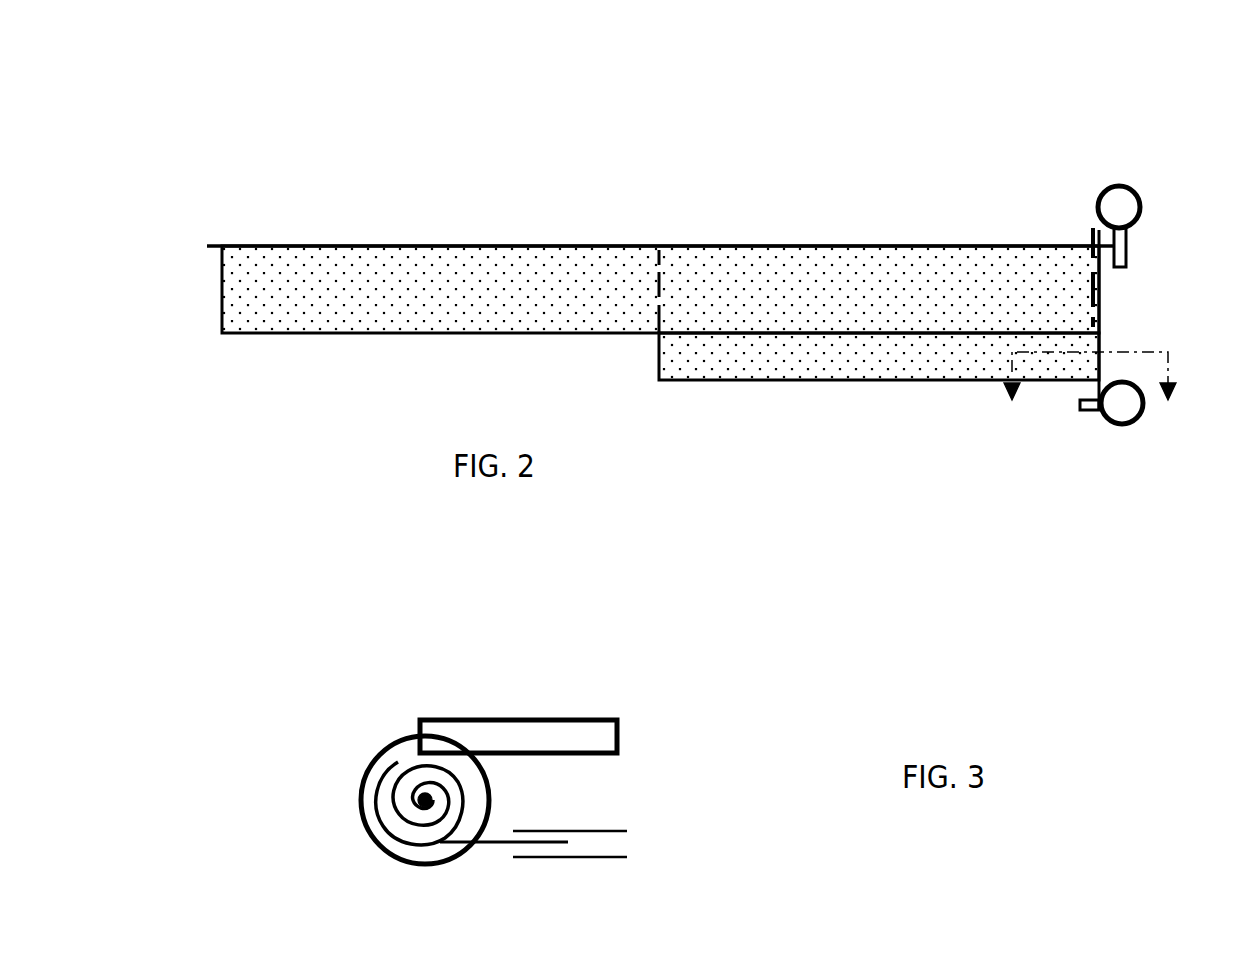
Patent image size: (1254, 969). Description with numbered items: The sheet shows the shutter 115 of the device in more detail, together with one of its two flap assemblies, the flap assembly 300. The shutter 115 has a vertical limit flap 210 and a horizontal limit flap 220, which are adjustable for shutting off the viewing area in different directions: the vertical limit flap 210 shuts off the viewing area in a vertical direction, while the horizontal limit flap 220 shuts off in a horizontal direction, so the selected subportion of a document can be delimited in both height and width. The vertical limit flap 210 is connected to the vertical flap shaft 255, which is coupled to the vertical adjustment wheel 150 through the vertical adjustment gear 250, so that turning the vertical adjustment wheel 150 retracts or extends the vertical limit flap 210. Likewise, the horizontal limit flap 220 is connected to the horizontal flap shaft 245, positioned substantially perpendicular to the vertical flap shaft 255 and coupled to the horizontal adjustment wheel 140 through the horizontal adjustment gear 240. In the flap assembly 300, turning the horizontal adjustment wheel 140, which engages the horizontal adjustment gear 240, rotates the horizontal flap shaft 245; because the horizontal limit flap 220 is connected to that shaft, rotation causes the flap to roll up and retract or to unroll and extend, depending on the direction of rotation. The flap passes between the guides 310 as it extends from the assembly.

In FIG. 2, the shutter 115 is at (591, 130).
In FIG. 2, the vertical flap shaft 255 is at (272, 246).
In FIG. 2, the vertical limit flap 210 is at (338, 312).
In FIG. 2, the horizontal limit flap 220 is at (772, 362).
In FIG. 3, the horizontal limit flap 220 is at (530, 843).
In FIG. 2, the vertical adjustment gear 250 is at (1100, 230).
In FIG. 2, the vertical adjustment wheel 150 is at (1120, 205).
In FIG. 2, the horizontal flap shaft 245 is at (1090, 234).
In FIG. 3, the horizontal flap shaft 245 is at (425, 800).
In FIG. 2, the horizontal adjustment gear 240 is at (1080, 405).
In FIG. 3, the horizontal adjustment gear 240 is at (392, 768).
In FIG. 2, the horizontal adjustment wheel 140 is at (1122, 410).
In FIG. 3, the horizontal adjustment wheel 140 is at (583, 731).
In FIG. 3, the flap assembly 300 is at (238, 750).
In FIG. 3, the guides 310 is at (607, 831).